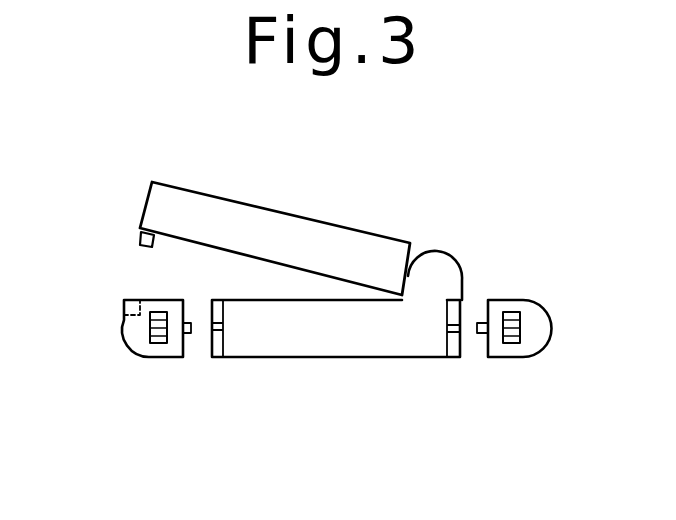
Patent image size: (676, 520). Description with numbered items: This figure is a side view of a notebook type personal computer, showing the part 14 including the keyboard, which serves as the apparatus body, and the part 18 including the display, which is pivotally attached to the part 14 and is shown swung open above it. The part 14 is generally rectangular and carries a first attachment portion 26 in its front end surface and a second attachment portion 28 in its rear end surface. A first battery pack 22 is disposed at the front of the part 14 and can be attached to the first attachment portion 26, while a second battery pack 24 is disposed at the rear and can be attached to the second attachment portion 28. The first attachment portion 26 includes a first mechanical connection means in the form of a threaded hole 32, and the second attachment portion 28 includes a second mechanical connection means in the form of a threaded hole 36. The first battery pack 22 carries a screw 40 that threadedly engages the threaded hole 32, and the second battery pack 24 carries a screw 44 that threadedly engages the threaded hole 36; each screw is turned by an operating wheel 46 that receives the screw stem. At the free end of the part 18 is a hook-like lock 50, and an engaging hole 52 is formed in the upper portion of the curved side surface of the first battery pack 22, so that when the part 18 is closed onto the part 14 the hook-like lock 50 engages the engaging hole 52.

The part including the keyboard 14 is at (345, 342).
The part including the display 18 is at (292, 222).
The first battery pack 22 is at (157, 358).
The second battery pack 24 is at (512, 358).
The first attachment portion 26 is at (208, 359).
The second attachment portion 28 is at (464, 359).
The first mechanical connection means (threaded hole) 32 is at (223, 333).
The second mechanical connection means (threaded hole) 36 is at (456, 327).
The screw 40 is at (190, 322).
The screw 44 is at (480, 322).
The operating wheel 46 is at (150, 330).
The hook-like lock 50 is at (141, 238).
The engaging hole 52 is at (122, 325).